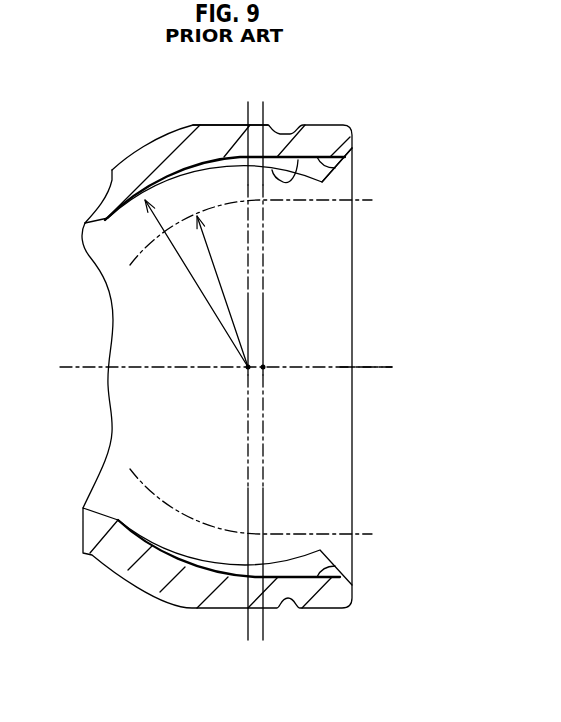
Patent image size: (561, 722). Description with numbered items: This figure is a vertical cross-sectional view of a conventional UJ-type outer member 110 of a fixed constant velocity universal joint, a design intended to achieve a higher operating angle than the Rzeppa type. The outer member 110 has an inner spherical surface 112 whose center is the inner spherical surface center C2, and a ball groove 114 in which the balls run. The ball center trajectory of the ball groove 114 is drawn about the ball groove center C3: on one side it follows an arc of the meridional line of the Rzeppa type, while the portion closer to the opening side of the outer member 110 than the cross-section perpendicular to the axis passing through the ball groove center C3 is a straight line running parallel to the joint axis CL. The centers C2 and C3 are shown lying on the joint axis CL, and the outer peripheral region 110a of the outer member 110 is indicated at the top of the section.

The outer member 110 is at (172, 123).
The outer peripheral surface 110a is at (218, 125).
The inner spherical surface 112 is at (298, 160).
The ball groove 114 is at (328, 172).
The inner spherical surface center C2 is at (248, 367).
The ball groove center C3 is at (263, 367).
The joint axis CL is at (368, 365).